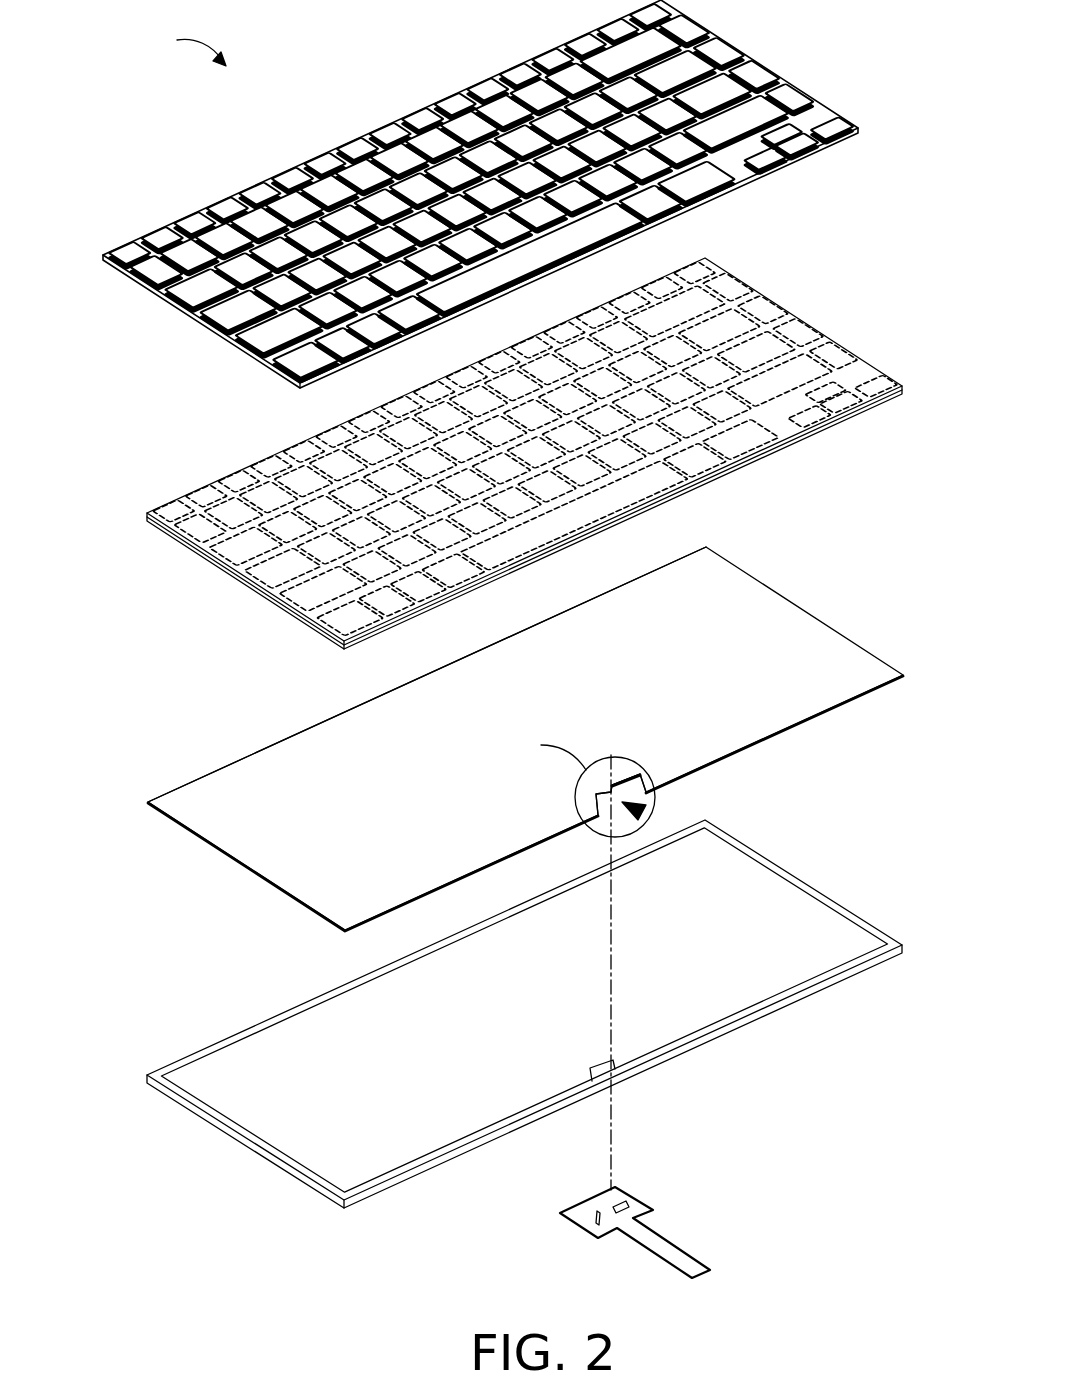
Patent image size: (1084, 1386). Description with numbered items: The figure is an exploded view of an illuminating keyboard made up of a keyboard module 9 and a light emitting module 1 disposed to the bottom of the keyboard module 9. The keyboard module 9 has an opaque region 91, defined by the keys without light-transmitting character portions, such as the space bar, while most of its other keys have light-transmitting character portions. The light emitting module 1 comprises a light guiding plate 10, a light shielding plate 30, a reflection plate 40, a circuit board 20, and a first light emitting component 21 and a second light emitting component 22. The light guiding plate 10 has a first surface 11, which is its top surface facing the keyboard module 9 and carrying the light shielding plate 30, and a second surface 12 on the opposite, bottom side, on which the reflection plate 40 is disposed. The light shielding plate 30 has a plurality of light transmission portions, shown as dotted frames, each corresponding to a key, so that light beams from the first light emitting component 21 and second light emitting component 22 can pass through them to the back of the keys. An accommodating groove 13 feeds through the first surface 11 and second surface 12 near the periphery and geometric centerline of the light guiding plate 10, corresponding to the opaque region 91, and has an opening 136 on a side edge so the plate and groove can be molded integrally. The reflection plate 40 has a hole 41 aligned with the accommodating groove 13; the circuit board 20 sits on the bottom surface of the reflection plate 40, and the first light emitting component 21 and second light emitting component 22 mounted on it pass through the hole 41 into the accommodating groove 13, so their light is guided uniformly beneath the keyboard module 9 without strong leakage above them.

The keyboard module 9 is at (755, 50).
The opaque region 91 is at (535, 255).
The light emitting module 1 is at (190, 433).
The light shielding plate 30 is at (826, 330).
The light guiding plate 10 is at (799, 620).
The first surface 11 is at (190, 793).
The second surface 12 is at (178, 818).
The accommodating groove 13 is at (638, 792).
The opening 136 is at (647, 815).
The reflection plate 40 is at (812, 898).
The hole 41 is at (625, 1062).
The circuit board 20 is at (640, 1210).
The first light emitting component 21 is at (597, 1212).
The second light emitting component 22 is at (620, 1205).